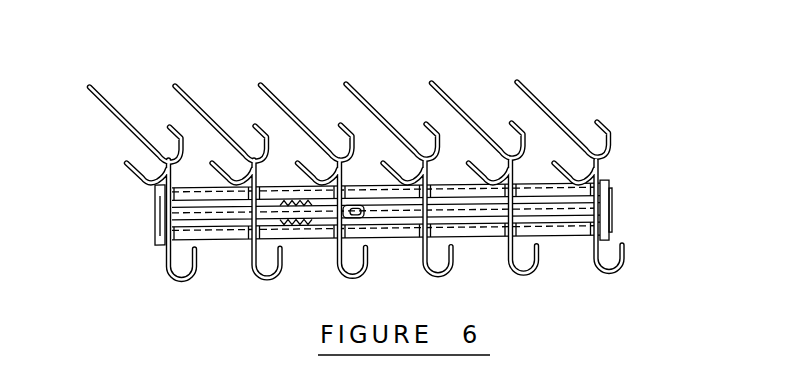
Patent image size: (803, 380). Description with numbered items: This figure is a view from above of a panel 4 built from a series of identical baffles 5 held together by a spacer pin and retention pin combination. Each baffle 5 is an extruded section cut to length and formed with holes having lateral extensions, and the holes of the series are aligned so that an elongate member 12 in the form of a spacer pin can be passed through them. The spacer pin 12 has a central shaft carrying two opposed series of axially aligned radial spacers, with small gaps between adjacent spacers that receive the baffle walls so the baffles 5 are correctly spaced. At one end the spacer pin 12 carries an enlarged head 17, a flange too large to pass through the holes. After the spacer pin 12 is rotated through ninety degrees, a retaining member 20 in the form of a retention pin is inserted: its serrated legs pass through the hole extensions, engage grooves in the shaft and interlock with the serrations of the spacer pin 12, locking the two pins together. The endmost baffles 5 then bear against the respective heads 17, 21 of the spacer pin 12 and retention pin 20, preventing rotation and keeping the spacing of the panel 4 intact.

The panel 4 is at (378, 182).
The baffle 5 is at (171, 91).
The elongate member 12 is at (573, 253).
The enlarged head 17 is at (604, 214).
The retaining member 20 is at (114, 231).
The enlarged head 21 is at (152, 204).